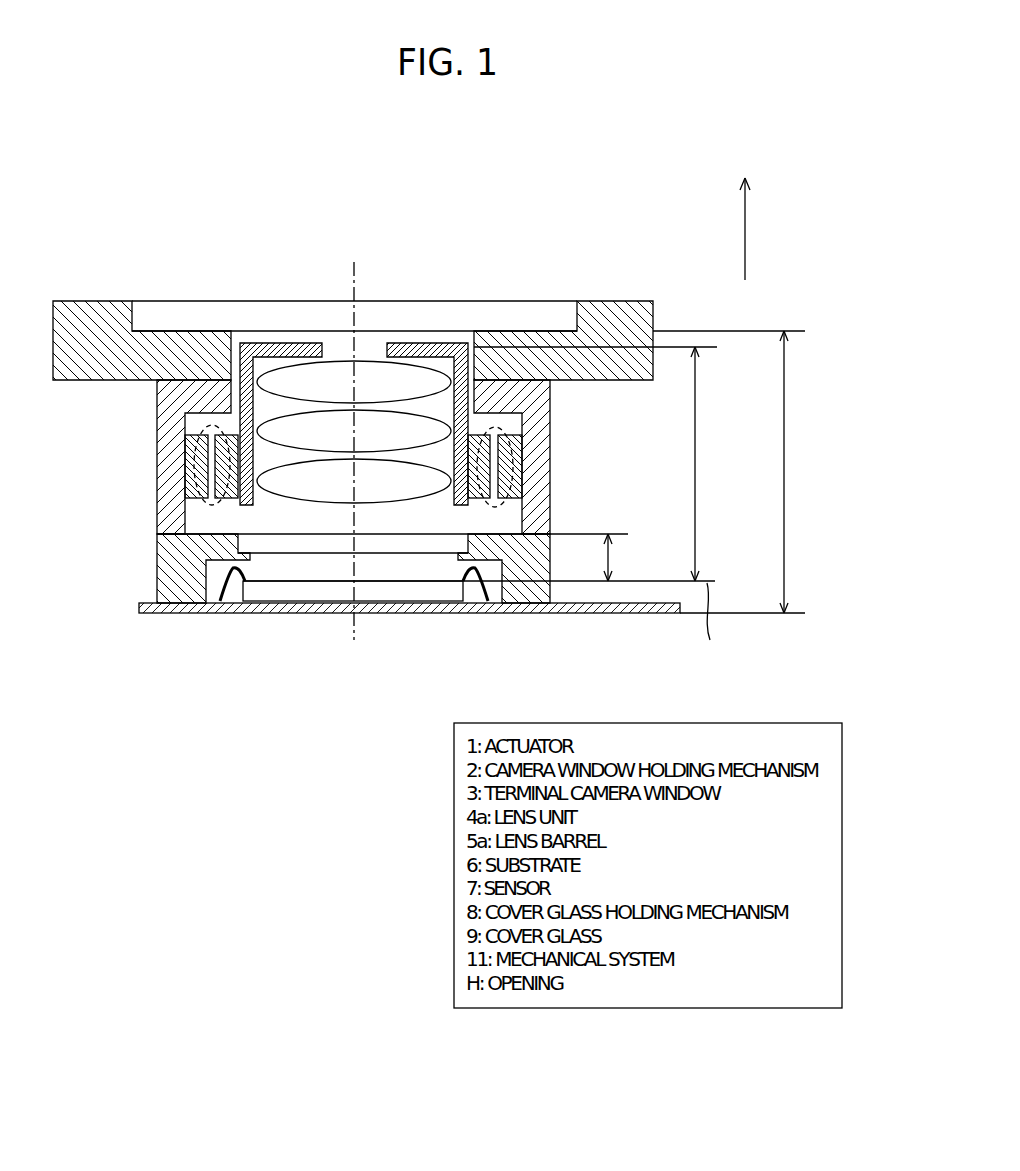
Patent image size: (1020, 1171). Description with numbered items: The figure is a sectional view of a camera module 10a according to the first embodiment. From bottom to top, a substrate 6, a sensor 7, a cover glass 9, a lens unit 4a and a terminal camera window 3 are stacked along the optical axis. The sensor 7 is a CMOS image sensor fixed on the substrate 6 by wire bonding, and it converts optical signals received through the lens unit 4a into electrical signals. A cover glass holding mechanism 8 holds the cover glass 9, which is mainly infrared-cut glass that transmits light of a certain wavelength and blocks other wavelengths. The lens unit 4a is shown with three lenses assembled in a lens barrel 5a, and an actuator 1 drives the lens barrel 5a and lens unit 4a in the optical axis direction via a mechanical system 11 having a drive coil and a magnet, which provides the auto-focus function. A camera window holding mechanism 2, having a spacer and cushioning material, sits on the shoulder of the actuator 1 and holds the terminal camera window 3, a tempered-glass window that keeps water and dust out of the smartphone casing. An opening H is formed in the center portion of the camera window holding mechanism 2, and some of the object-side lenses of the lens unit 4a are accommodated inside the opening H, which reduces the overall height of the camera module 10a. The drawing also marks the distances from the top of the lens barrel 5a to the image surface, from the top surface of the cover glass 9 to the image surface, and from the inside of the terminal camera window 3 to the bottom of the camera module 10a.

The actuator 1 is at (160, 421).
The camera window holding mechanism 2 is at (95, 313).
The terminal camera window 3 is at (297, 315).
The lens unit 4a is at (378, 477).
The lens barrel 5a is at (251, 343).
The substrate 6 is at (205, 617).
The sensor 7 is at (272, 593).
The cover glass holding mechanism 8 is at (163, 571).
The cover glass 9 is at (440, 545).
The mechanical system 11 is at (190, 463).
The opening H is at (336, 349).
The camera module 10a is at (604, 199).